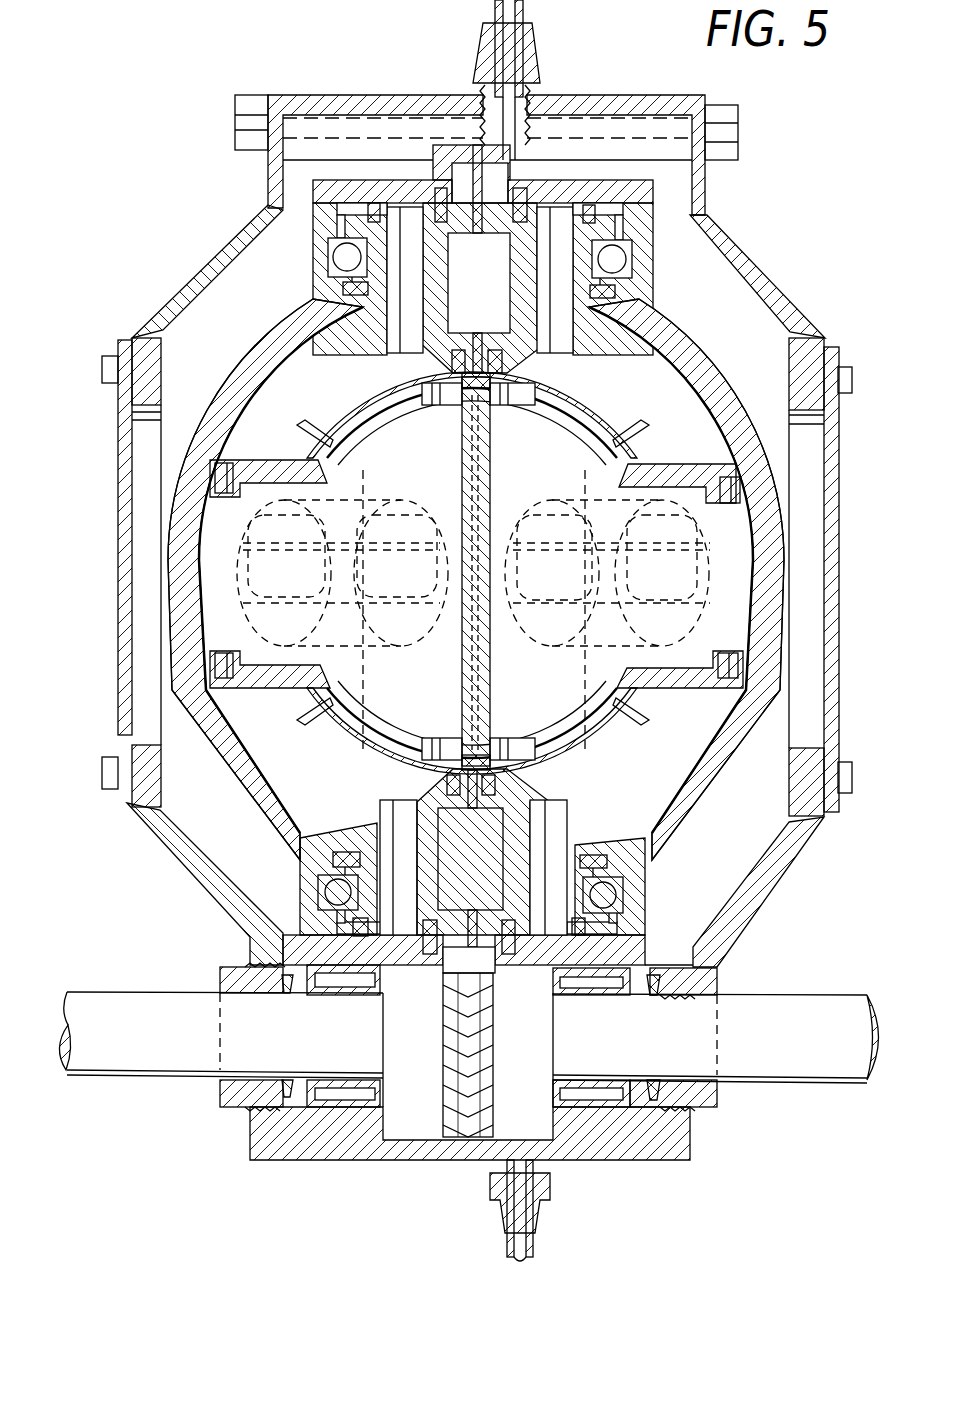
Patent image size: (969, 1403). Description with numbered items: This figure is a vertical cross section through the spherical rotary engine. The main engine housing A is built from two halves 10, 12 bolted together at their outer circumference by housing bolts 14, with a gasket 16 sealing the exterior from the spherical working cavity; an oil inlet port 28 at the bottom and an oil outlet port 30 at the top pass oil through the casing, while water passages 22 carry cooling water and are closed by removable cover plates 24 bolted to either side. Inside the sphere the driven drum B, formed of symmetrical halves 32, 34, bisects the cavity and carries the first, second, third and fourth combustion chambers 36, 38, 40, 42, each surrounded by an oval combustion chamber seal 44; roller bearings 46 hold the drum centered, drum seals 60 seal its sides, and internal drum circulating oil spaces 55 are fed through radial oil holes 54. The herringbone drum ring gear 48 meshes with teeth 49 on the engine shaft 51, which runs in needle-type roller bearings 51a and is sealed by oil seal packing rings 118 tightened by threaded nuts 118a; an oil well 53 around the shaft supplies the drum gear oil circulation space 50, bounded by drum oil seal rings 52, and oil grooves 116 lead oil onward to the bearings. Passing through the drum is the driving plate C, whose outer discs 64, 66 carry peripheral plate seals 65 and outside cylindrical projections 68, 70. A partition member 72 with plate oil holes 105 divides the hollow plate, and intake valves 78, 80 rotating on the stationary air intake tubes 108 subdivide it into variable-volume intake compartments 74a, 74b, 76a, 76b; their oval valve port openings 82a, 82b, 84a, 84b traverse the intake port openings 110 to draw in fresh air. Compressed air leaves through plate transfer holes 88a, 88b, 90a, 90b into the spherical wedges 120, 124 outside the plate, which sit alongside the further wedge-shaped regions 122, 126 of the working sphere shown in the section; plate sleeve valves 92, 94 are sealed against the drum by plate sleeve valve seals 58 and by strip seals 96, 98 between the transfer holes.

The housing half 10 is at (655, 95).
The housing half 12 is at (346, 95).
The housing bolts 14 is at (740, 128).
The gasket 16 is at (483, 100).
The water passages 22 is at (212, 334).
The cover plates 24 is at (118, 470).
The oil inlet port 28 is at (535, 1247).
The oil outlet port 30 is at (523, 12).
The drum half 32 is at (545, 320).
The drum half 34 is at (420, 325).
The first combustion chamber 36 is at (567, 290).
The second combustion chamber 38 is at (408, 863).
The third combustion chamber 40 is at (555, 865).
The fourth combustion chamber 42 is at (414, 293).
The combustion chamber seal 44 is at (441, 206).
The roller bearings 46 is at (345, 257).
The drum ring gear 48 is at (485, 208).
The engine shaft gear teeth 49 is at (462, 1130).
The drum gear oil circulation space 50 is at (455, 150).
The engine shaft 51 is at (820, 1002).
The needle-type roller bearings 51a is at (345, 990).
The drum oil seal rings 52 is at (418, 182).
The oil well 53 is at (410, 1135).
The radial oil holes 54 is at (477, 240).
The drum circulating oil spaces 55 is at (503, 308).
The plate sleeve valve seals 58 is at (452, 365).
The drum seals 60 is at (358, 297).
The outer circular disc 64 is at (690, 464).
The plate seals 65 is at (222, 462).
The outer circular disc 66 is at (670, 688).
The cylindrical projection 68 is at (398, 432).
The cylindrical projection 70 is at (410, 722).
The plate partition member 72 is at (490, 650).
The intake compartment 74a is at (748, 575).
The intake compartment 74b is at (748, 560).
The intake compartment 76a is at (228, 545).
The intake compartment 76b is at (228, 553).
The intake valve 78 is at (747, 598).
The intake valve 80 is at (240, 642).
The valve port opening 82a is at (662, 557).
The valve port opening 82b is at (554, 557).
The valve port opening 84a is at (286, 556).
The valve port opening 84b is at (397, 556).
The plate transfer porthole 88a is at (512, 406).
The plate transfer hole 88b is at (440, 406).
The plate transfer porthole 90a is at (445, 727).
The plate transfer hole 90b is at (528, 727).
The plate sleeve valve 92 is at (368, 404).
The plate sleeve valve 94 is at (590, 737).
The expansion strip seal 96 is at (490, 440).
The expansion strip seal 98 is at (490, 682).
The plate oil holes 105 is at (455, 662).
The air intake tubes 108 is at (425, 507).
The intake port opening 110 is at (310, 608).
The oil grooves 116 is at (345, 988).
The oil seal packing rings 118 is at (288, 997).
The pressure adjusting threaded nuts 118a is at (715, 964).
The spherical wedge 120 is at (690, 400).
The stator ring segment 122 is at (680, 735).
The spherical wedge 124 is at (285, 745).
The stator ring segment 126 is at (295, 358).
The main engine housing A is at (772, 272).
The drum B is at (440, 985).
The plate C is at (275, 455).